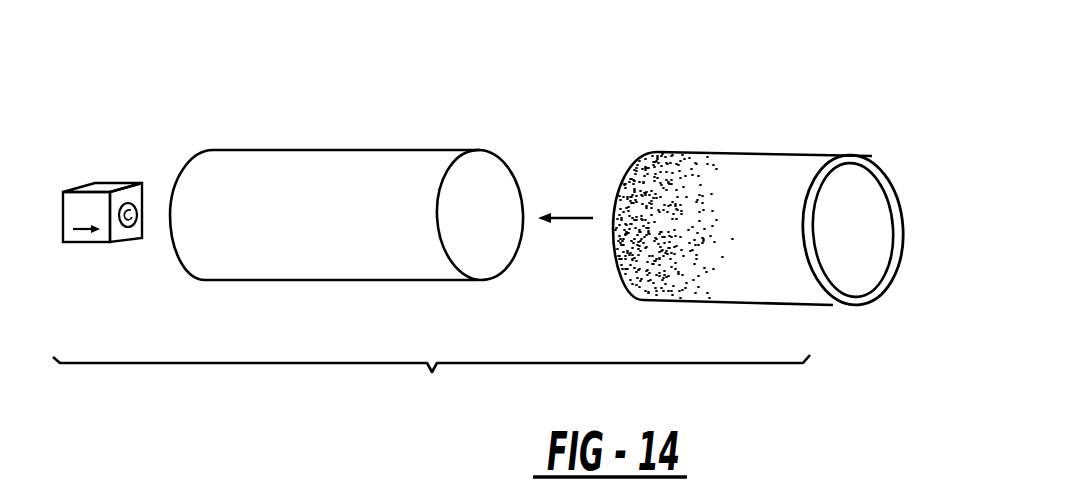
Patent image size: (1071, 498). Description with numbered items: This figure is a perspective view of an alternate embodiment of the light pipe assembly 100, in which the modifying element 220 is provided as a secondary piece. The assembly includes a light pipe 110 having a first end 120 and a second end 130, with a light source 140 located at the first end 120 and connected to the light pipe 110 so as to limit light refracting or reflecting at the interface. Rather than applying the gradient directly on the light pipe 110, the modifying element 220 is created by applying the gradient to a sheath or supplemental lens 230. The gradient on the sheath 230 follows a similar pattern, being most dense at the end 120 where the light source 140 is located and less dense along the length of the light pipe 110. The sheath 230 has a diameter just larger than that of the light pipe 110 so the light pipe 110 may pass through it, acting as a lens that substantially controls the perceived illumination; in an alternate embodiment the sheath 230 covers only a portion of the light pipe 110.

The light pipe assembly 100 is at (431, 384).
The light pipe 110 is at (352, 146).
The first end 120 is at (151, 267).
The second end 130 is at (526, 271).
The light source 140 is at (87, 242).
The modifying element 220 is at (854, 86).
The sheath 230 is at (740, 153).